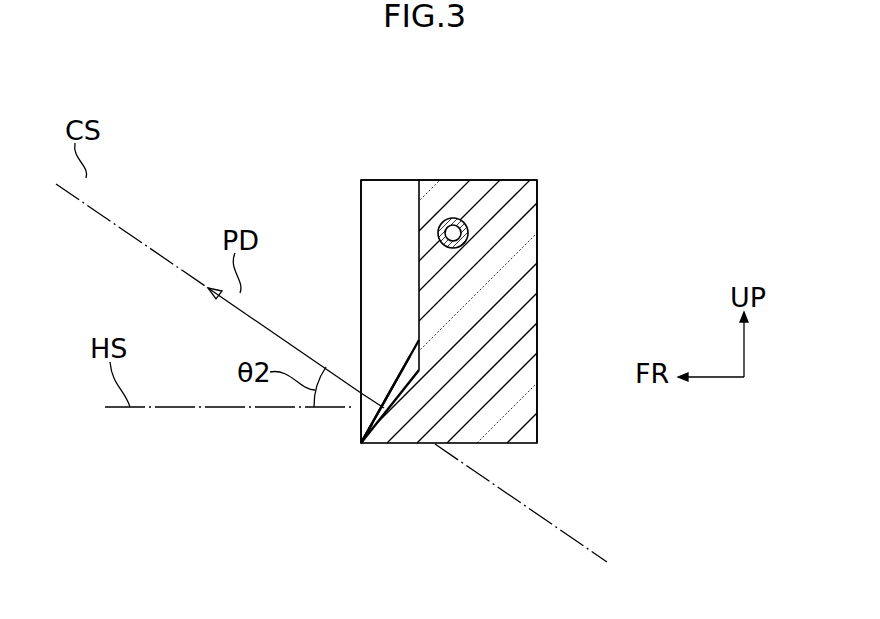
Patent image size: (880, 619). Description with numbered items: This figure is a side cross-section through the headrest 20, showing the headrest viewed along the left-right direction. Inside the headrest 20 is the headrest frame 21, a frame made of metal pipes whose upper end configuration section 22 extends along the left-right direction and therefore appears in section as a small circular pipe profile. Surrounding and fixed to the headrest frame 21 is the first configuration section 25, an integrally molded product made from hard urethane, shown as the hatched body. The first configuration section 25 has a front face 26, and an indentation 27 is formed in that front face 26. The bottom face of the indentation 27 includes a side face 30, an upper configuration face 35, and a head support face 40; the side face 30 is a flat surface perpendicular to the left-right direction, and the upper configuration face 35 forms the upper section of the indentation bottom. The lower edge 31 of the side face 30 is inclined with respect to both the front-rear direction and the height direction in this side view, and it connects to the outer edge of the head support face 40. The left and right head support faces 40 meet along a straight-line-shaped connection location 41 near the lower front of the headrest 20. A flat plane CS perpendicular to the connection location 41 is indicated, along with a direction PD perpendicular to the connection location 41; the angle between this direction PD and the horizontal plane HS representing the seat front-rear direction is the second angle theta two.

The headrest 20 is at (265, 178).
The headrest frame 21 is at (488, 179).
The upper end configuration section 22 is at (455, 218).
The first configuration section 25 is at (530, 237).
The front face 26 is at (361, 193).
The indentation 27 is at (392, 192).
The side face 30 is at (382, 262).
The lower edge 31 is at (387, 397).
The upper configuration face 35 is at (420, 232).
The head support face 40 is at (407, 360).
The connection location 41 is at (361, 419).